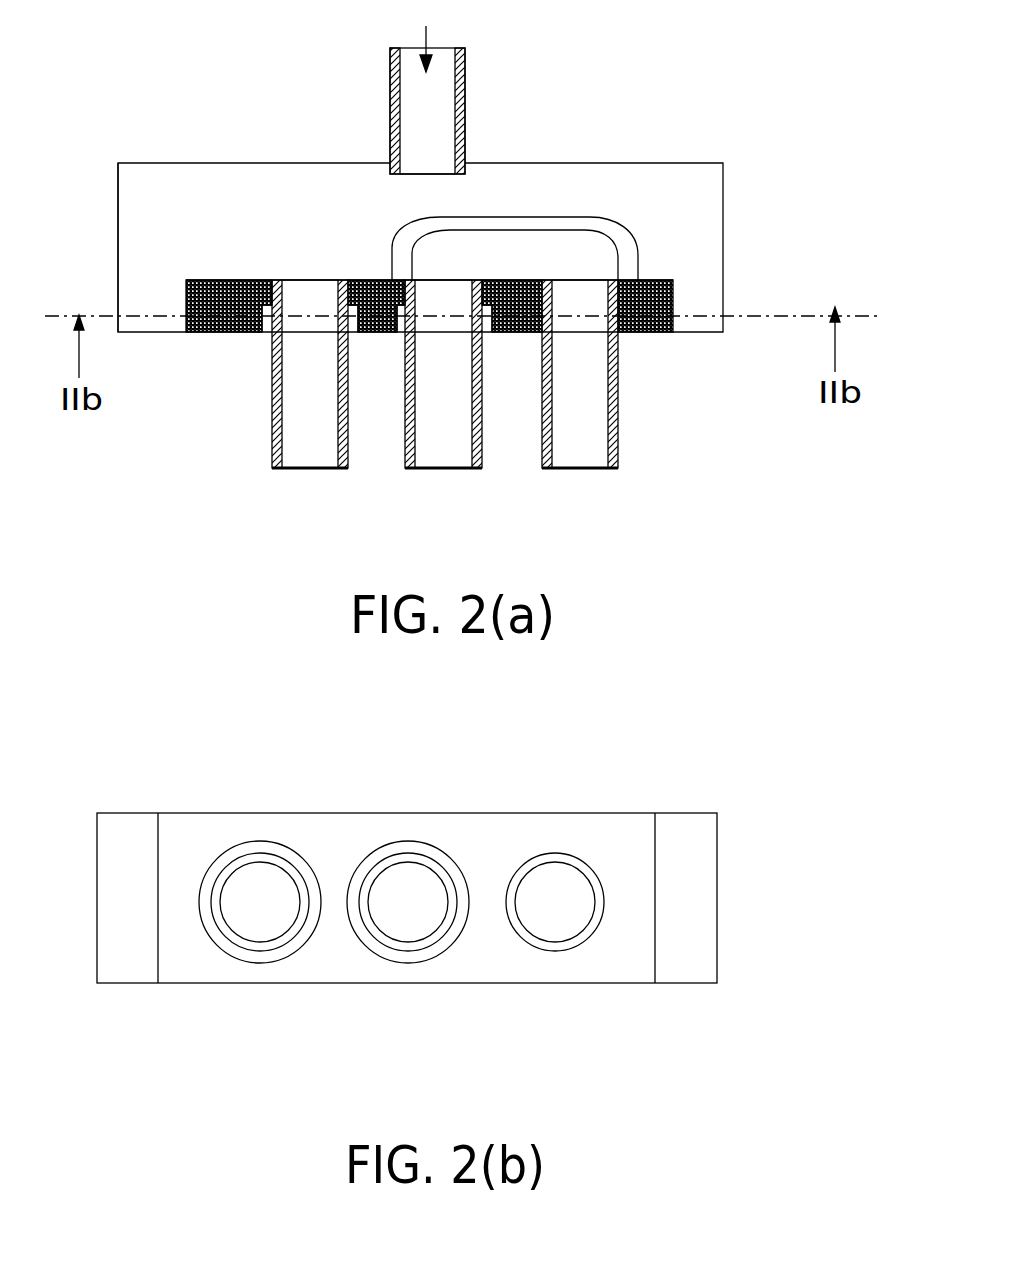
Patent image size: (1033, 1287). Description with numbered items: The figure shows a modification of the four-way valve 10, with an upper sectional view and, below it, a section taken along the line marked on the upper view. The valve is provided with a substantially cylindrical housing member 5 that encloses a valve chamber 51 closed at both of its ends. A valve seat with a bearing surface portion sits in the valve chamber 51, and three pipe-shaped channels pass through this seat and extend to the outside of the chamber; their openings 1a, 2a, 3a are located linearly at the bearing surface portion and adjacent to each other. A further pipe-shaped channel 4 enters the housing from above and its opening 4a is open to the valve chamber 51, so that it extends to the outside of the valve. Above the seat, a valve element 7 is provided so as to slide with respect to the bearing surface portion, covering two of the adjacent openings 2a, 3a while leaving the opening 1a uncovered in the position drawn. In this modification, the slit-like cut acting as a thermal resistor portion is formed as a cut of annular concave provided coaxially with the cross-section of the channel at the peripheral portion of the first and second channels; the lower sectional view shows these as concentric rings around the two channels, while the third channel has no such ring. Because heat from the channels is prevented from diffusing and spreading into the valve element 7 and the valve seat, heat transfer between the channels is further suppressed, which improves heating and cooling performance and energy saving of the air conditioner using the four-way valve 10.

The four-way valve 10 is at (117, 78).
The opening of first channel 1a is at (303, 280).
The opening of second channel 2a is at (437, 280).
The opening of third channel 3a is at (582, 280).
The pipe-shaped channel 4 is at (470, 63).
The opening of pipe-shaped channel 4a is at (450, 167).
The housing member 5 is at (723, 197).
The valve chamber 51 is at (155, 205).
The valve element 7 is at (630, 268).